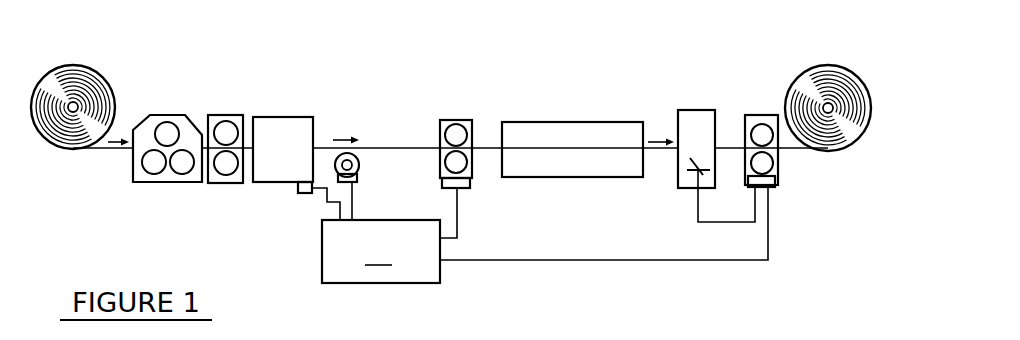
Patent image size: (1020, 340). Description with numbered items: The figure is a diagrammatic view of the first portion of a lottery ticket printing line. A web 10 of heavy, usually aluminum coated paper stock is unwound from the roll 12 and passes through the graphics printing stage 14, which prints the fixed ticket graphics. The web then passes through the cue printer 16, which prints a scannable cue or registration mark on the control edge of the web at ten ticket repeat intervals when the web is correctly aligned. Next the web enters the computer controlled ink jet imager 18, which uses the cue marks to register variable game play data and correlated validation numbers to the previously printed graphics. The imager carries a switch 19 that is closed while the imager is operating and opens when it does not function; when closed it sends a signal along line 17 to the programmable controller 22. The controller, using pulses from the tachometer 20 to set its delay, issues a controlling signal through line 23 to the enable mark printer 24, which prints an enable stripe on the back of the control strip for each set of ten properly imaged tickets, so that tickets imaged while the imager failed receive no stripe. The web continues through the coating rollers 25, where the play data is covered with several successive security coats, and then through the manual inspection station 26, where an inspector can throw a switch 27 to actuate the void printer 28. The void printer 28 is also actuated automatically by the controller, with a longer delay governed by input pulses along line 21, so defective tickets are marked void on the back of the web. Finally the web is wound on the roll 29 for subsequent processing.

The web 10 is at (404, 141).
The roll 12 is at (70, 65).
The graphics printing stage 14 is at (133, 170).
The cue printer 16 is at (218, 115).
The line 17 is at (332, 214).
The ink jet imager 18 is at (268, 182).
The switch 19 is at (300, 194).
The tachometer 20 is at (368, 163).
The line 21 is at (353, 199).
The programmable controller 22 is at (542, 264).
The line 23 is at (458, 213).
The enable mark printer 24 is at (472, 163).
The coating rollers 25 is at (516, 122).
The manual inspection station 26 is at (678, 118).
The switch 27 is at (690, 177).
The void printer 28 is at (759, 115).
The roll 29 is at (828, 65).